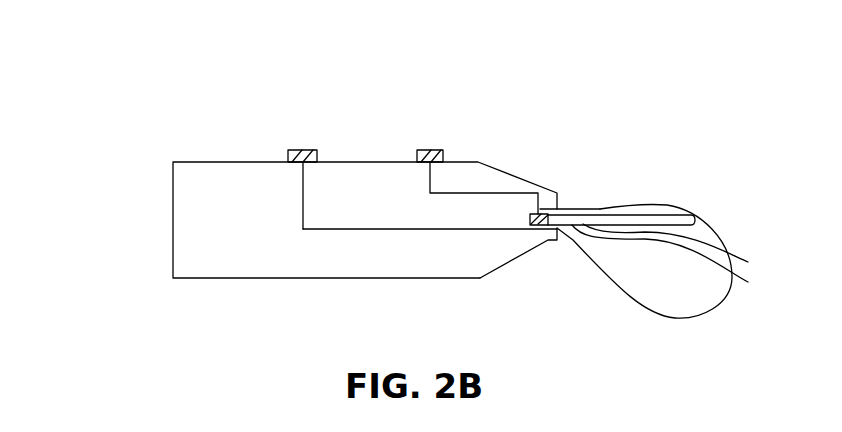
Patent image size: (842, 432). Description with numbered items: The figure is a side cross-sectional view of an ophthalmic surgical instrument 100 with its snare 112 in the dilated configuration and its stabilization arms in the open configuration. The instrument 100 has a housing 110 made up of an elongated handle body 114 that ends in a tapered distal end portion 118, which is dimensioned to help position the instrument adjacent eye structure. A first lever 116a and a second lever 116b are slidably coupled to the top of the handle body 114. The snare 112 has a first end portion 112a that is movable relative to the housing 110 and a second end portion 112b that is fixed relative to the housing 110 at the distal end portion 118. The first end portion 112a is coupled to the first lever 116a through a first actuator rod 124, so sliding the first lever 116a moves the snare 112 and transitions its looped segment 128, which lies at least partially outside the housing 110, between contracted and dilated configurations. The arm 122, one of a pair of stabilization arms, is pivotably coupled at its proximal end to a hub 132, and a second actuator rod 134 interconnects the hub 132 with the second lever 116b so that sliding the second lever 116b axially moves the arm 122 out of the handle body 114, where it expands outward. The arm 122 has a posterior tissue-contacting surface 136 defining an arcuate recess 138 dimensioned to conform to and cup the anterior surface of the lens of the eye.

The ophthalmic surgical instrument 100 is at (72, 59).
The housing 110 is at (220, 141).
The snare 112 is at (580, 295).
The first end portion 112a is at (340, 230).
The second end portion 112b is at (568, 210).
The handle body 114 is at (243, 280).
The first lever 116a is at (306, 150).
The second lever 116b is at (433, 150).
The distal end portion 118 is at (483, 280).
The arm 122 is at (612, 215).
The first actuator rod 124 is at (300, 192).
The looped segment 128 is at (697, 318).
The hub 132 is at (530, 220).
The second actuator rod 134 is at (535, 190).
The posterior tissue-contacting surface 136 is at (683, 247).
The arcuate recess 138 is at (678, 262).